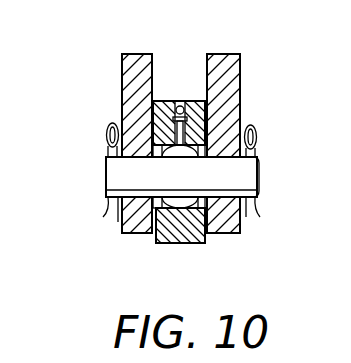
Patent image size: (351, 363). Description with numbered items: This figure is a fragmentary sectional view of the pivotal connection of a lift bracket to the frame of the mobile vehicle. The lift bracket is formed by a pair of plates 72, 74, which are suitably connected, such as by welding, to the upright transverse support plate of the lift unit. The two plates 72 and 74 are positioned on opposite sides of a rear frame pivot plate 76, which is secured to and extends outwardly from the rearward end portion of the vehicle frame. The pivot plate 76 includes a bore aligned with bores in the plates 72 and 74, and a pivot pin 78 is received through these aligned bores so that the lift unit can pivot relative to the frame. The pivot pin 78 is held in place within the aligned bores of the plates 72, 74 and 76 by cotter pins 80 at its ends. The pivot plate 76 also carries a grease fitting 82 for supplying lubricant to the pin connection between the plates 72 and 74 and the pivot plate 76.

The plate 72 is at (232, 78).
The plate 74 is at (128, 75).
The rear frame pivot plate 76 is at (170, 240).
The pivot pin 78 is at (120, 172).
The cotter pin 80 is at (102, 140).
The grease fitting 82 is at (183, 100).